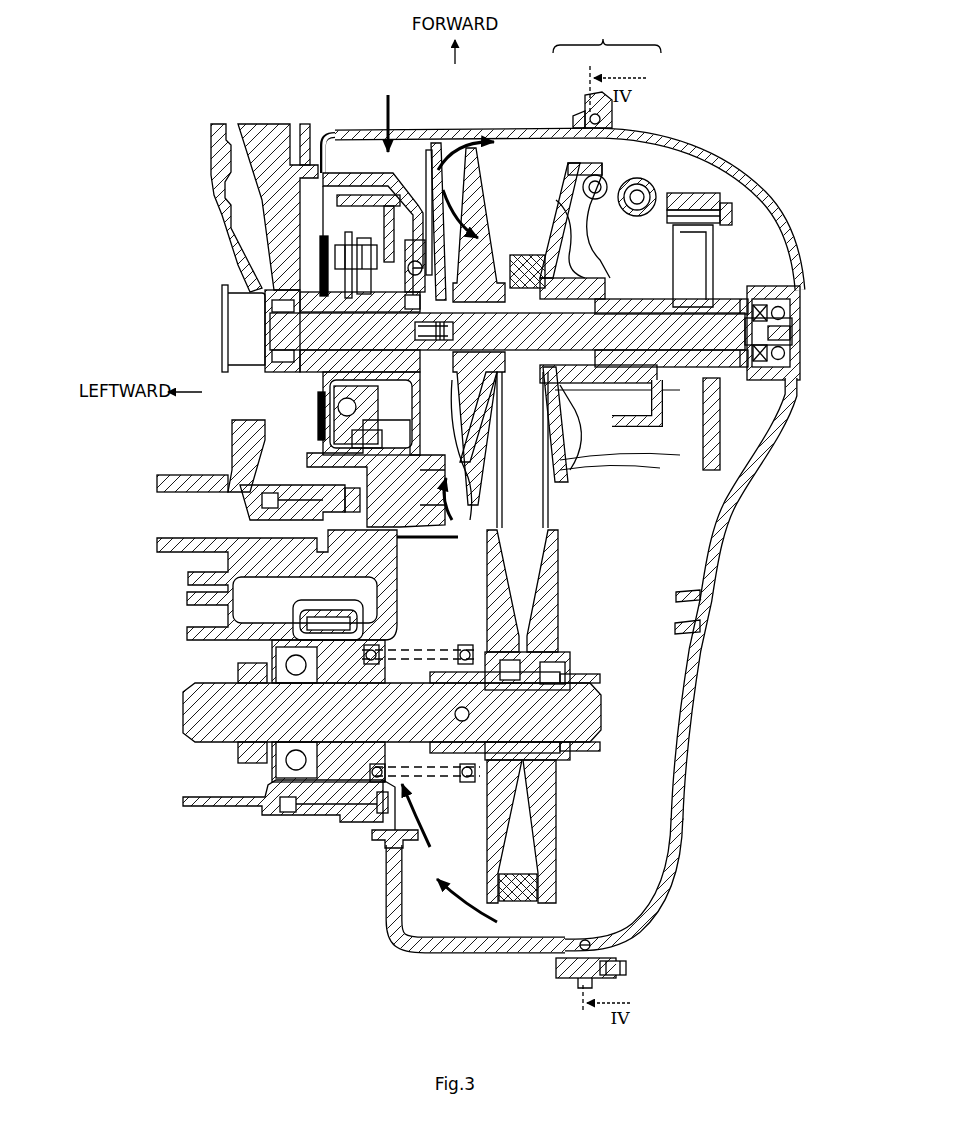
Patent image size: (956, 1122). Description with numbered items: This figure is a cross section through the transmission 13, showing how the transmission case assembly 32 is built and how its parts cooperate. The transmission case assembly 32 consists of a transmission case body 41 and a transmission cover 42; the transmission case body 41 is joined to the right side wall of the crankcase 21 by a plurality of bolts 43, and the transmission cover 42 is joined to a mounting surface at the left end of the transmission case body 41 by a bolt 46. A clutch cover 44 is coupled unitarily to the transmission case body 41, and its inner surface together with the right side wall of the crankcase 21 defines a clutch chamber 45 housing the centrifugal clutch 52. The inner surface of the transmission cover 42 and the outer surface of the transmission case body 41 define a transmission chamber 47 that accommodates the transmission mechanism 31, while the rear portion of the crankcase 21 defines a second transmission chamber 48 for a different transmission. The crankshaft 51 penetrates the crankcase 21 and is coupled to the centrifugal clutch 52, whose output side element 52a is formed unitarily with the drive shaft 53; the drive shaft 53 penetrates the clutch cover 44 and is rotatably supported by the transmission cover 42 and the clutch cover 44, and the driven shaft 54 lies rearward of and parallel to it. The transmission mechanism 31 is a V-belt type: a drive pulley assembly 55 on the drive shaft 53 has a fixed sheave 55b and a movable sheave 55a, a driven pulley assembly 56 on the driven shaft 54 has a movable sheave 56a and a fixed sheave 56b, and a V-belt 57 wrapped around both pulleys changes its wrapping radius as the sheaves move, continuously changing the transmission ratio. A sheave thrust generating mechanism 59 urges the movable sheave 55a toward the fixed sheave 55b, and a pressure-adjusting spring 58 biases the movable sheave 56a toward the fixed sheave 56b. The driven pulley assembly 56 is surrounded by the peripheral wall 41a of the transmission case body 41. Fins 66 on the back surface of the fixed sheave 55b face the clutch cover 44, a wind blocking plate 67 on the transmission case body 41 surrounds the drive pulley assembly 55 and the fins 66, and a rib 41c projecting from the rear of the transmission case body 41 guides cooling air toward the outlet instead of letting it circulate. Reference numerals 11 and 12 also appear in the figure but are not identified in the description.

The continuously variable transmission unit 11 is at (742, 74).
The engine body 12 is at (226, 106).
The transmission 13 is at (697, 890).
The crankcase 21 is at (250, 125).
The transmission mechanism 31 is at (582, 848).
The transmission case assembly 32 is at (607, 34).
The transmission case body 41 is at (547, 124).
The peripheral wall 41a is at (433, 952).
The rib 41c is at (383, 863).
The transmission cover 42 is at (661, 133).
The bolts 43 is at (300, 497).
The clutch cover 44 is at (421, 157).
The clutch chamber 45 is at (291, 185).
The bolt 46 is at (604, 984).
The transmission chamber 47 is at (668, 551).
The second transmission chamber 48 is at (233, 783).
The crankshaft 51 is at (256, 295).
The centrifugal clutch 52 is at (348, 199).
The output side element 52a is at (387, 210).
The drive shaft 53 is at (673, 297).
The driven shaft 54 is at (572, 720).
The drive pulley assembly 55 is at (595, 507).
The movable sheave 55a is at (547, 184).
The fixed sheave 55b is at (489, 217).
The driven pulley assembly 56 is at (552, 765).
The movable sheave 56a is at (497, 908).
The fixed sheave 56b is at (540, 908).
The V-belt 57 is at (514, 256).
The pressure-adjusting spring 58 is at (412, 648).
The sheave thrust generating mechanism 59 is at (681, 182).
The fins 66 is at (440, 158).
The wind blocking plate 67 is at (444, 540).